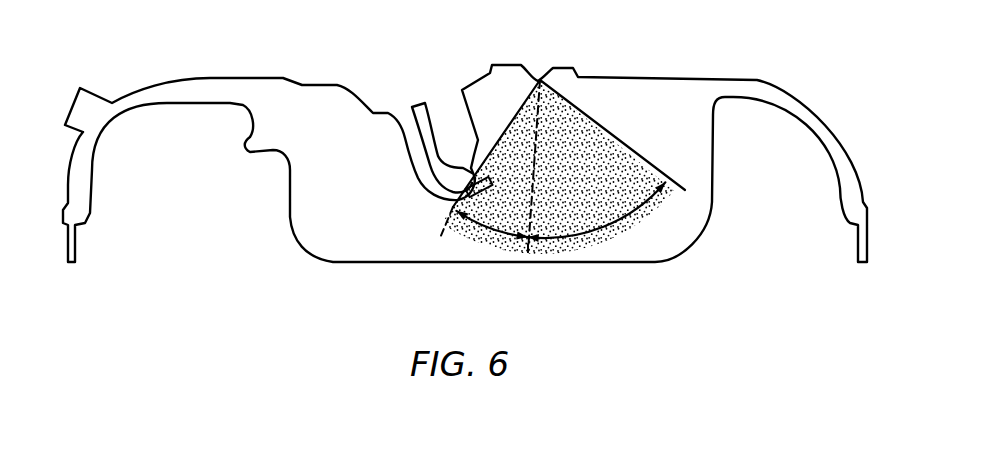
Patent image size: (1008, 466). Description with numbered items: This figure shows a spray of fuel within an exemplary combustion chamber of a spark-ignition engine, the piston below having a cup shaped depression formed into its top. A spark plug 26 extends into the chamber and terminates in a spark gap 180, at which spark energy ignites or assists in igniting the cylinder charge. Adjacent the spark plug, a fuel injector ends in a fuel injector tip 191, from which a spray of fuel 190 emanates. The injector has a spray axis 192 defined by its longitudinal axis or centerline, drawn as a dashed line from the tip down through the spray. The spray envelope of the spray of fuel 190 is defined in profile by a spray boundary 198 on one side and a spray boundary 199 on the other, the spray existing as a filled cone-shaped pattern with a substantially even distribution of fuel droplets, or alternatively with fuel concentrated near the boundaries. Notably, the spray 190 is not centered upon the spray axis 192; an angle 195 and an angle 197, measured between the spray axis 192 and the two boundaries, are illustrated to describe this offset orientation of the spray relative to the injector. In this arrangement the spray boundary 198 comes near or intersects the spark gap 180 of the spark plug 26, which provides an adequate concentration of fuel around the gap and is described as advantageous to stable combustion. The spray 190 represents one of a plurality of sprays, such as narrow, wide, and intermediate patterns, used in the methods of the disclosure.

The spark plug 26 is at (445, 103).
The spark gap 180 is at (463, 173).
The spray of fuel 190 is at (592, 170).
The fuel injector tip 191 is at (542, 80).
The spray axis 192 is at (530, 252).
The angle 195 is at (487, 235).
The angle 197 is at (609, 225).
The spray boundary 198 is at (442, 231).
The spray boundary 199 is at (660, 167).